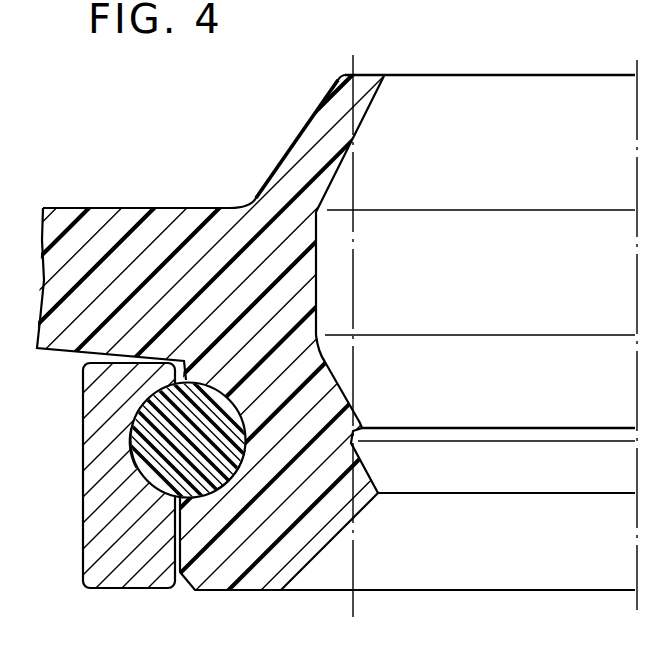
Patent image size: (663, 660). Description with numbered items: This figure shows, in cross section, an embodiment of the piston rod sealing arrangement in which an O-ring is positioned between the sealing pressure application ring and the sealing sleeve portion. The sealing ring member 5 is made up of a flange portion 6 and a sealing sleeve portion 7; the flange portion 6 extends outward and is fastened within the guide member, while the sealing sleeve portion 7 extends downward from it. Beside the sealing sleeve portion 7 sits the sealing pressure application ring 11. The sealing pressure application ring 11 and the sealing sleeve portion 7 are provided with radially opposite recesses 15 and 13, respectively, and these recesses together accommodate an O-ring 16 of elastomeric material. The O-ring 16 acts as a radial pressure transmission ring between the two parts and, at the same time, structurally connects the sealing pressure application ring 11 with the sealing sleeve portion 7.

The sealing ring member 5 is at (121, 174).
The flange portion 6 is at (193, 219).
The sealing sleeve portion 7 is at (230, 537).
The sealing pressure application ring 11 is at (90, 535).
The recess 13 is at (247, 457).
The recess 15 is at (135, 458).
The O-ring 16 is at (226, 427).